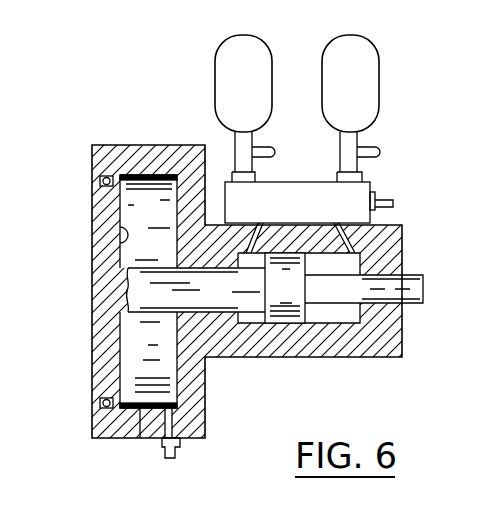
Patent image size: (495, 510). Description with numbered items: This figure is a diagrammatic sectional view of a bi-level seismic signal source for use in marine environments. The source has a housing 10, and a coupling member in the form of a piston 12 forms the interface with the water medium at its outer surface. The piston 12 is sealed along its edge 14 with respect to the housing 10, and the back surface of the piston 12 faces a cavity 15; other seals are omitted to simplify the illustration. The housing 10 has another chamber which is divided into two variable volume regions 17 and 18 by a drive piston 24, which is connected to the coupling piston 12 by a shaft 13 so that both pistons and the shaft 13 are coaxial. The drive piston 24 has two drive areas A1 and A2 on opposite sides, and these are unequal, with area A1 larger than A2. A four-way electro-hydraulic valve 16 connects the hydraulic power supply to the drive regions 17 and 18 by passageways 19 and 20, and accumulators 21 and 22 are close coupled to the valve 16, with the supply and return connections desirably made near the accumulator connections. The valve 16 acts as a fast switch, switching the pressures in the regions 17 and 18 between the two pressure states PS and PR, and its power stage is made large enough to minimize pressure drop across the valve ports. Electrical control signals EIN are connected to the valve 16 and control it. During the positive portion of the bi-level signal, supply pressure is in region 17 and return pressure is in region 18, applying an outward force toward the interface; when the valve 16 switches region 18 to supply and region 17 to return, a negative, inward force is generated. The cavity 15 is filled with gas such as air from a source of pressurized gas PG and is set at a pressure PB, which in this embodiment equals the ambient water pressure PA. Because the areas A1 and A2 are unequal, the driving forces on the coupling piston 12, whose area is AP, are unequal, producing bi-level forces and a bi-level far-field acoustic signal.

The housing 10 is at (403, 342).
The piston 12 is at (90, 270).
The shaft 13 is at (228, 302).
The edge 14 is at (92, 418).
The cavity 15 is at (140, 438).
The four-way electro-hydraulic valve 16 is at (372, 186).
The variable volume region 17 is at (347, 318).
The variable volume region 18 is at (248, 323).
The passageway 19 is at (355, 238).
The passageway 20 is at (262, 236).
The accumulator 21 is at (379, 60).
The accumulator 22 is at (215, 60).
The drive piston 24 is at (297, 301).
The drive area A1 is at (312, 322).
The drive area A2 is at (262, 322).
The piston area AP is at (118, 231).
The ambient pressure PA is at (34, 185).
The cavity pressure PB is at (145, 218).
The source of pressurized gas PG is at (185, 452).
The return pressure PR is at (268, 156).
The supply pressure PS is at (373, 156).
The electrical control signals EIN is at (406, 207).